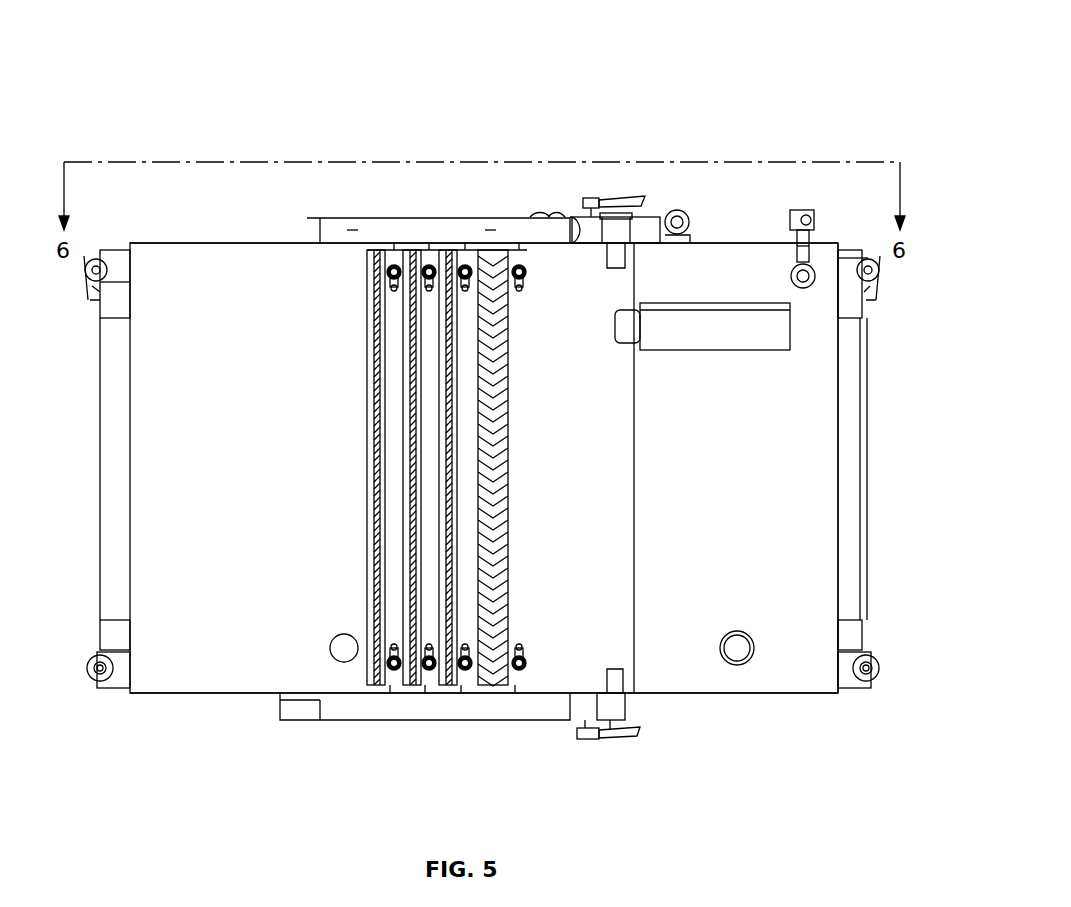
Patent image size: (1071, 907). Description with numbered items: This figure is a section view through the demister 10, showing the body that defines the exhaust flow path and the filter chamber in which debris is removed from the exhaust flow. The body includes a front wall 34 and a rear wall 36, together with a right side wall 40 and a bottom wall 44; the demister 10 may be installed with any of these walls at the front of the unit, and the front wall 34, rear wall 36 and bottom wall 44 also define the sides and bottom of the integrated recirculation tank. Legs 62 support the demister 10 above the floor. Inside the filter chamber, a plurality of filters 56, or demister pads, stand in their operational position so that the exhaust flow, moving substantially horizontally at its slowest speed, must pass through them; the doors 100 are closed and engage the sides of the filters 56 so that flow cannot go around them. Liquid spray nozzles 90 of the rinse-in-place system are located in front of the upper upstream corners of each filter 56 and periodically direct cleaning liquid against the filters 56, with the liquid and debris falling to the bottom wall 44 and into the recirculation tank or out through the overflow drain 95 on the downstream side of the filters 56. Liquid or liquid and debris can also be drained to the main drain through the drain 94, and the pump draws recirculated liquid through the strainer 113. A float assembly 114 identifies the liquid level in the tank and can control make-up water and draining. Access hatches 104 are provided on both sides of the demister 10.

The demister 10 is at (722, 86).
The front wall 34 is at (732, 695).
The rear wall 36 is at (177, 243).
The right side wall 40 is at (840, 505).
The bottom wall 44 is at (215, 678).
The filters 56 is at (490, 538).
The legs 62 is at (86, 264).
The liquid spray nozzles 90 is at (519, 264).
The drain 94 is at (720, 648).
The overflow drain 95 is at (330, 648).
The doors 100 is at (371, 230).
The access hatches 104 is at (100, 455).
The strainer 113 is at (720, 330).
The float assembly 114 is at (790, 278).